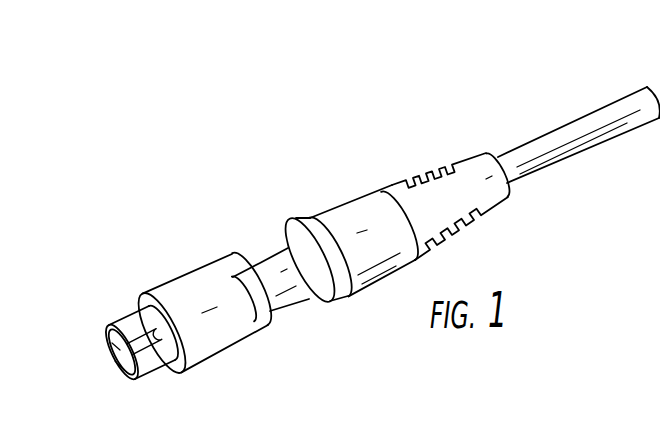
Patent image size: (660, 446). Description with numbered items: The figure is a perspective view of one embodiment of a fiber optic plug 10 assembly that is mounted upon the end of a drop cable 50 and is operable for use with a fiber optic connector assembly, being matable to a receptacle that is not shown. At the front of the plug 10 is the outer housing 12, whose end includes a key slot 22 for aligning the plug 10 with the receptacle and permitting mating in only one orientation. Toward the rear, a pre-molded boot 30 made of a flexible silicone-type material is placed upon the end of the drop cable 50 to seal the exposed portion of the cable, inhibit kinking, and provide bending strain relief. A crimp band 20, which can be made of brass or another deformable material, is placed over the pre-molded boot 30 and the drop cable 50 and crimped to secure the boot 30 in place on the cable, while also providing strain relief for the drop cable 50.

The fiber optic plug 10 is at (282, 136).
The outer housing 12 is at (168, 282).
The crimp band 20 is at (292, 303).
The key slot 22 is at (133, 350).
The pre-molded boot 30 is at (383, 185).
The drop cable 50 is at (537, 140).